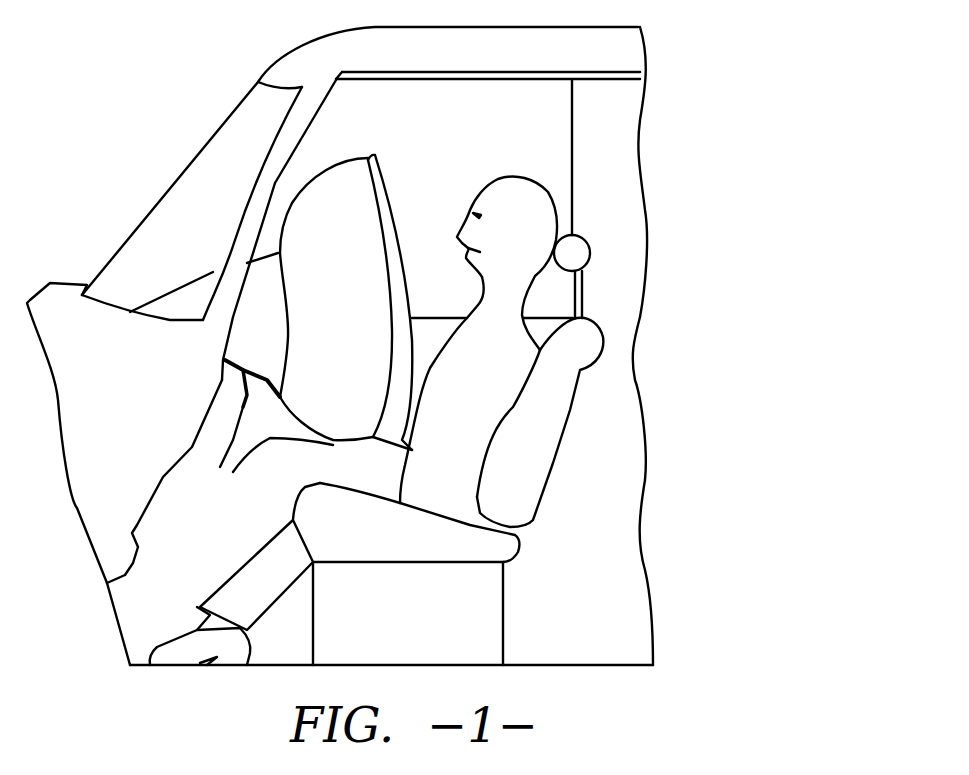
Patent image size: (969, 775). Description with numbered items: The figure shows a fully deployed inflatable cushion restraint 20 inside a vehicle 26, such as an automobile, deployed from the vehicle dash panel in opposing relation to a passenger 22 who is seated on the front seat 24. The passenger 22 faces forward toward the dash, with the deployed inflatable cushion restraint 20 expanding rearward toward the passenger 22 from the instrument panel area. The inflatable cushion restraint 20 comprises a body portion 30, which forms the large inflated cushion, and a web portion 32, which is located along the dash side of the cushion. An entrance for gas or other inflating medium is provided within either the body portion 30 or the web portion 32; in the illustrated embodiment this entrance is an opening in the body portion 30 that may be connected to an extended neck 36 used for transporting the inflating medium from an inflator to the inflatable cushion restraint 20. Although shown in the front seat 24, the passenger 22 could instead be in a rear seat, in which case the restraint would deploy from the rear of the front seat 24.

The inflatable cushion restraint 20 is at (353, 272).
The passenger 22 is at (553, 200).
The front seat 24 is at (570, 413).
The vehicle 26 is at (698, 86).
The body portion 30 is at (315, 180).
The web portion 32 is at (402, 232).
The extended neck 36 is at (232, 474).